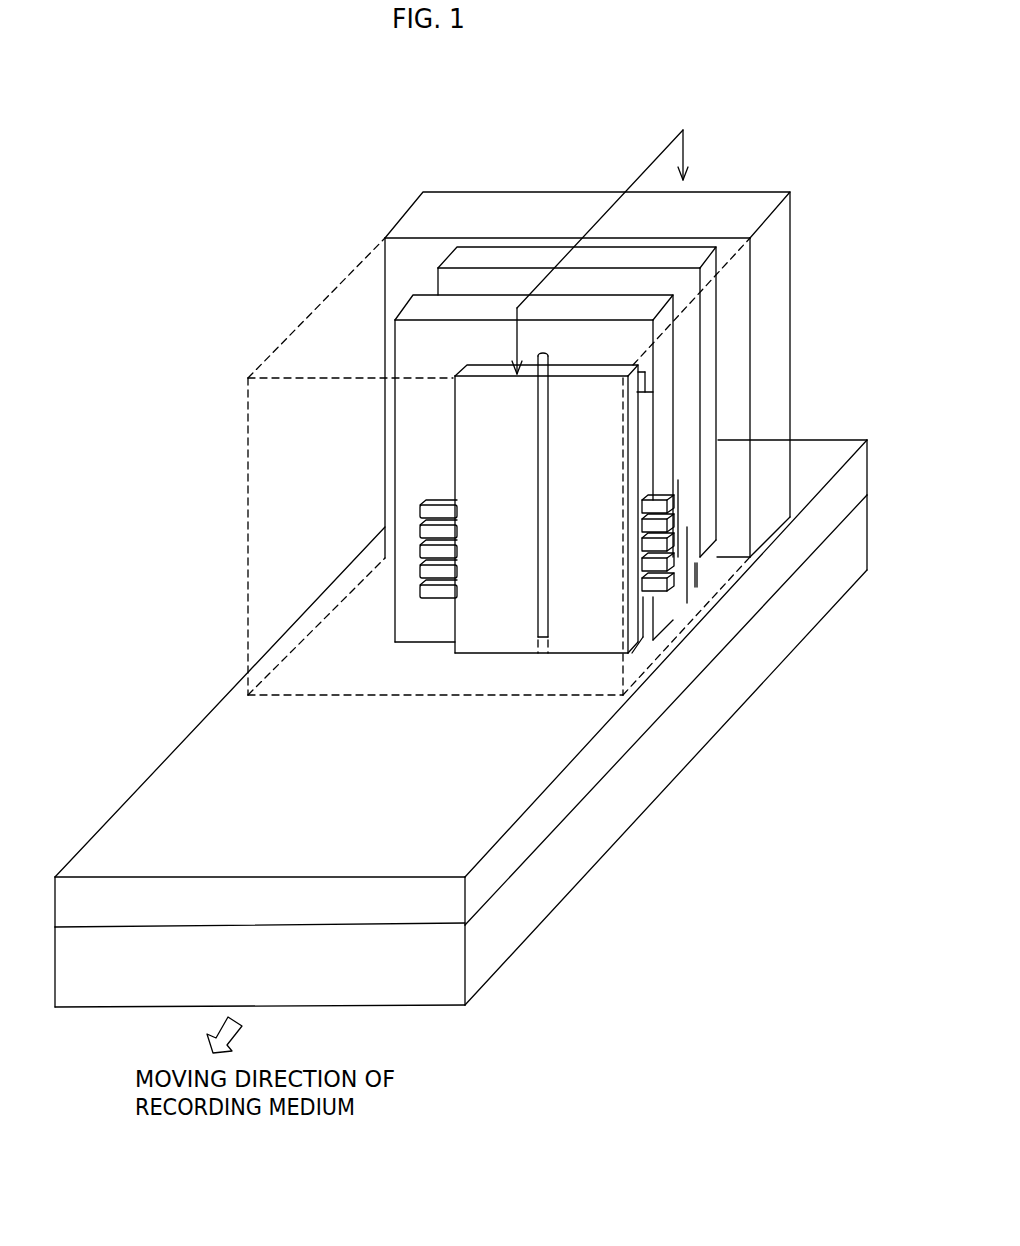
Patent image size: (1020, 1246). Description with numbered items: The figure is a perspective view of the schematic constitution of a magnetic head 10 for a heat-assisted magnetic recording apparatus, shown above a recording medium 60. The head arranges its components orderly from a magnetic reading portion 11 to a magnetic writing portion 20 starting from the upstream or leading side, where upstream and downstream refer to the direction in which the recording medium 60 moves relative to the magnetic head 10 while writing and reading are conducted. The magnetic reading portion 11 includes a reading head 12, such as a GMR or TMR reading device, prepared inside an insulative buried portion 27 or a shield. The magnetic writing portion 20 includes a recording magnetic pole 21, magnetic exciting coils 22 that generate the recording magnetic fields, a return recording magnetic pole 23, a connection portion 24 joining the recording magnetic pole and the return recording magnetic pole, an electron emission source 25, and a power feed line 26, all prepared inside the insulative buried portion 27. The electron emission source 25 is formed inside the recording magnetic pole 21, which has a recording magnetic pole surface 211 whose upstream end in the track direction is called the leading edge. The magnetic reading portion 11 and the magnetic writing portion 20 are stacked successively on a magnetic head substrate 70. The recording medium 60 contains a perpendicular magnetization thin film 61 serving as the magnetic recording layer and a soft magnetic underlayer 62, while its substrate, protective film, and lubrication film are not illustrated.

The magnetic head 10 is at (505, 464).
The magnetic reading portion 11 is at (781, 565).
The reading head 12 is at (697, 583).
The magnetic writing portion 20 is at (652, 657).
The recording magnetic pole 21 is at (618, 557).
The recording magnetic pole surface 211 is at (617, 655).
The magnetic exciting coils 22 is at (676, 580).
The return recording magnetic pole 23 is at (663, 327).
The connection portion 24 is at (648, 417).
The electron emission source 25 is at (540, 632).
The power feed line 26 is at (537, 492).
The insulative buried portion 27 is at (358, 308).
The recording medium 60 is at (461, 738).
The perpendicular magnetization thin film 61 is at (510, 838).
The soft magnetic underlayer 62 is at (517, 910).
The magnetic head substrate 70 is at (443, 213).